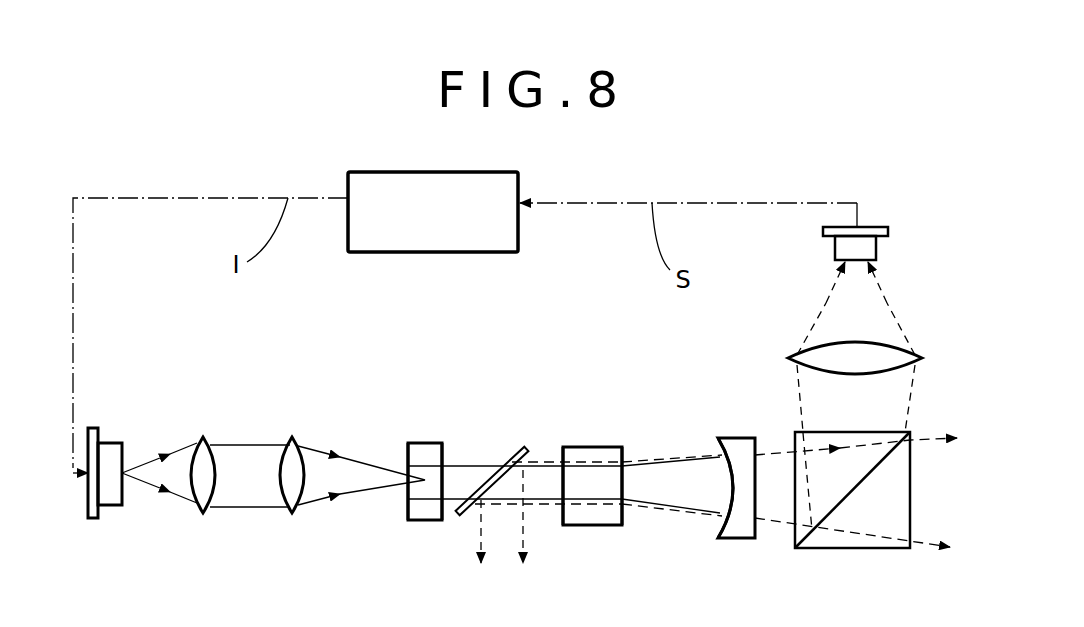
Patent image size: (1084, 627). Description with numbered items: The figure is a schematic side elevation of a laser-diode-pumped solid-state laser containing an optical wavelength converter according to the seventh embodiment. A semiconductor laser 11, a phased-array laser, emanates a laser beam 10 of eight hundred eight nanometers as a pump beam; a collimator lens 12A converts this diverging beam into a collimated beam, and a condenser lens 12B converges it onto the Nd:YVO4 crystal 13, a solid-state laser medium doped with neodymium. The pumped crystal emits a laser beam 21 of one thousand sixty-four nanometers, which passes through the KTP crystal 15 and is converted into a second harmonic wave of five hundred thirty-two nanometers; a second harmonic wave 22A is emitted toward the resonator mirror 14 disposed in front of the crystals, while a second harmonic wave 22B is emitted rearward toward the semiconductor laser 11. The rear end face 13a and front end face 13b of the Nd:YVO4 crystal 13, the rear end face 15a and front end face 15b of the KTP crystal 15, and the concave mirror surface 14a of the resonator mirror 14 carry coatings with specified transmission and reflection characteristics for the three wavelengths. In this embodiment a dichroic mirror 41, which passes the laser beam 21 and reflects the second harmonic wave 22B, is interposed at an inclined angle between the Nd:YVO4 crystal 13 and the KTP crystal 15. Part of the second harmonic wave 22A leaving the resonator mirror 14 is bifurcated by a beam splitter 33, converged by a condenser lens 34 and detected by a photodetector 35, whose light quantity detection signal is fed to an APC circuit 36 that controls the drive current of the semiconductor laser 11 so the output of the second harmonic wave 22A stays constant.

The laser beam 10 is at (185, 450).
The semiconductor laser 11 is at (117, 440).
The collimator lens 12A is at (205, 437).
The condenser lens 12B is at (297, 437).
The Nd:YVO4 crystal 13 is at (422, 440).
The rear end face 13a is at (408, 446).
The front end face 13b is at (443, 448).
The resonator mirror 14 is at (748, 430).
The concave mirror surface 14a is at (722, 522).
The KTP crystal 15 is at (600, 444).
The rear end face 15a is at (563, 450).
The front end face 15b is at (624, 450).
The laser beam 21 is at (665, 506).
The second harmonic wave 22A is at (781, 528).
The second harmonic wave 22B is at (545, 508).
The beam splitter 33 is at (843, 549).
The condenser lens 34 is at (835, 357).
The photodetector 35 is at (850, 248).
The APC circuit 36 is at (478, 253).
The dichroic mirror 41 is at (468, 512).